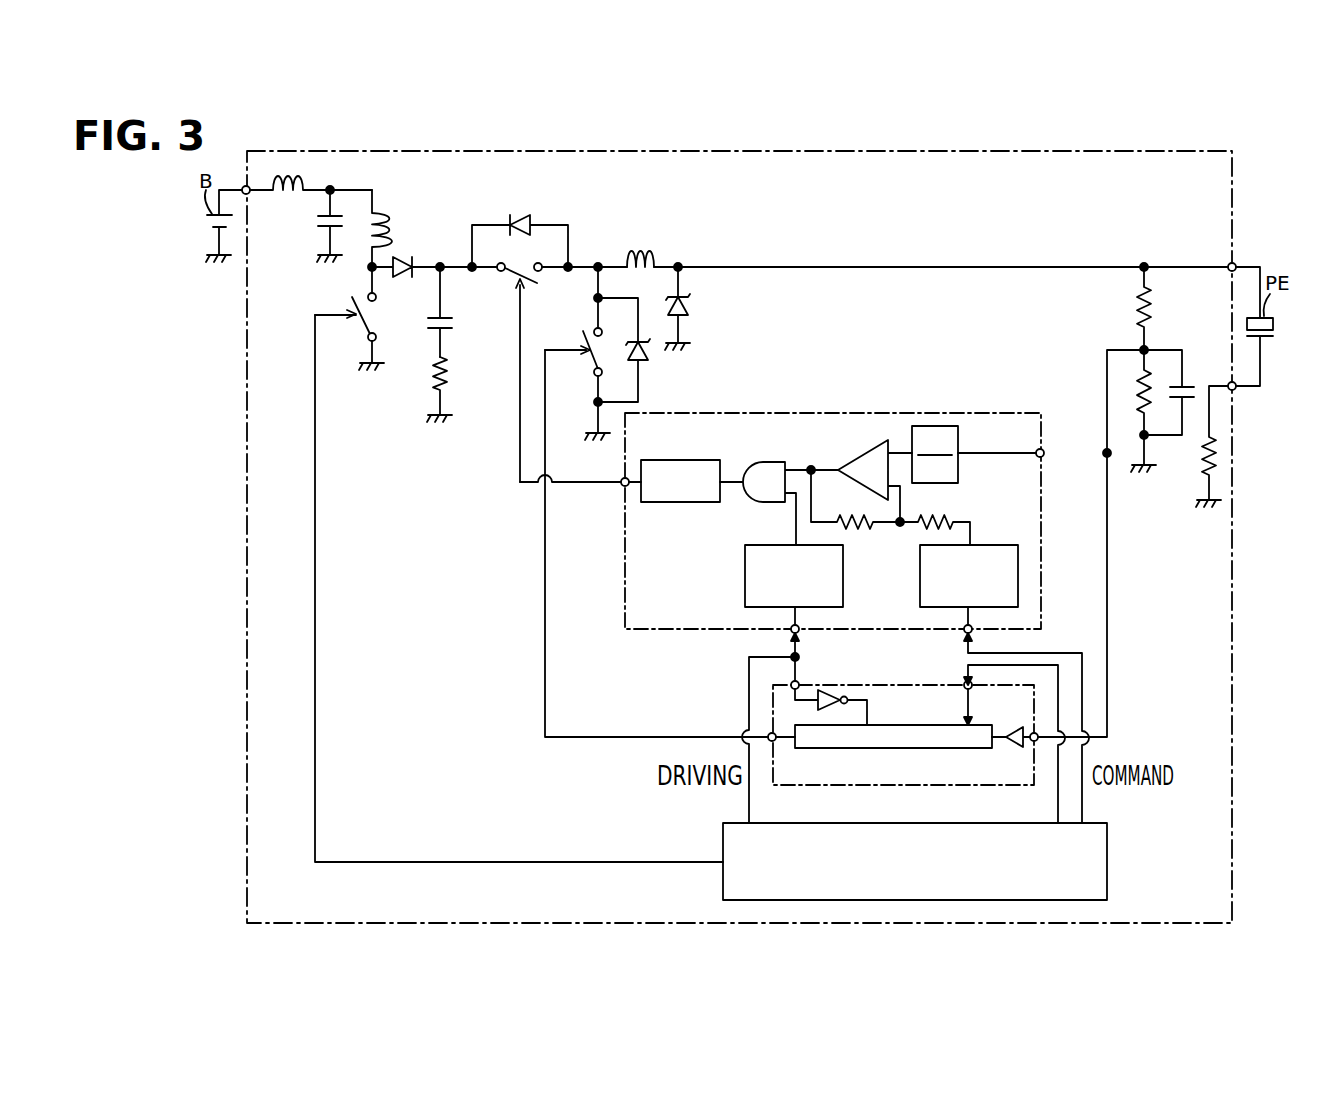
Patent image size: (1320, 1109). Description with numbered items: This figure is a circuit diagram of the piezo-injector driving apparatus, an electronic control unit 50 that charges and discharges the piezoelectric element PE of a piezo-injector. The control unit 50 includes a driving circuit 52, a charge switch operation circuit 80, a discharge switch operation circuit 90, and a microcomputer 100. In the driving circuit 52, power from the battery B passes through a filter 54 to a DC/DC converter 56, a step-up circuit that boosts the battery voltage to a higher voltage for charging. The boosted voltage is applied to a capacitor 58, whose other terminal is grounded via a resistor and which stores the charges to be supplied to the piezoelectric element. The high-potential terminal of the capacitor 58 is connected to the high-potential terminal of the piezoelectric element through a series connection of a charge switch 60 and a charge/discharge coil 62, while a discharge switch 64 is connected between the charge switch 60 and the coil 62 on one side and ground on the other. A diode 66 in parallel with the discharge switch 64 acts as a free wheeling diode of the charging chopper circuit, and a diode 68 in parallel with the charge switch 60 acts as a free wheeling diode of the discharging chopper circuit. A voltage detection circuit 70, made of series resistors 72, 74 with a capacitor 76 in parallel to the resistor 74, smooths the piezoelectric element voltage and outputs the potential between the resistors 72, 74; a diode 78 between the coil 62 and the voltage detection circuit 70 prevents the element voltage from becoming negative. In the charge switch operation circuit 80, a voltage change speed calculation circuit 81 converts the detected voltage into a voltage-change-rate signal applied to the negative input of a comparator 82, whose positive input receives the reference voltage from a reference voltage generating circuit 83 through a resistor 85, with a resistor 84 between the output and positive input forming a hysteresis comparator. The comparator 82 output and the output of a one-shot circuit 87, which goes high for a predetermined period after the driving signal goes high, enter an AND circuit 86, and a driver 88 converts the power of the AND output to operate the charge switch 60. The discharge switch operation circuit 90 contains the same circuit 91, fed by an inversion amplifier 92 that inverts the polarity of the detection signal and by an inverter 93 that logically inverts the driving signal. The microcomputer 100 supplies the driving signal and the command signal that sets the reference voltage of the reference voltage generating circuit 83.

The electronic control unit 50 is at (1232, 808).
The driving circuit 52 is at (836, 234).
The filter 54 is at (321, 176).
The DC/DC converter 56 is at (408, 203).
The capacitor 58 is at (440, 318).
The charge switch 60 is at (509, 278).
The charge/discharge coil 62 is at (647, 248).
The discharge switch 64 is at (591, 356).
The diode 66 is at (646, 352).
The diode 68 is at (522, 215).
The voltage detection circuit 70 is at (1127, 471).
The resistor 72 is at (1140, 308).
The resistor 74 is at (1140, 398).
The capacitor 76 is at (1184, 382).
The diode 78 is at (690, 300).
The charge switch operation circuit 80 is at (832, 499).
The voltage change speed calculation circuit 81 is at (958, 430).
The comparator 82 is at (858, 459).
The reference voltage generating circuit 83 is at (920, 578).
The resistor 84 is at (843, 520).
The resistor 85 is at (950, 522).
The AND circuit 86 is at (750, 502).
The one-shot circuit 87 is at (745, 578).
The driver 88 is at (670, 502).
The discharge switch operation circuit 90 is at (903, 738).
The same circuit 91 is at (912, 725).
The inversion amplifier 92 is at (1013, 725).
The inverter 93 is at (833, 690).
The microcomputer 100 is at (1107, 858).